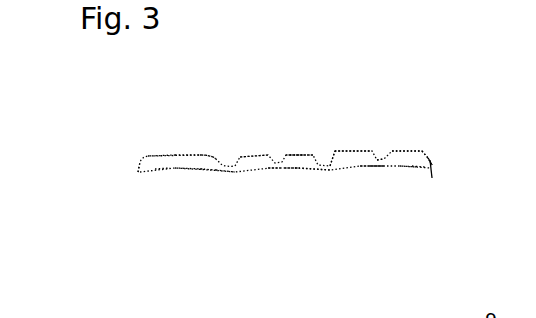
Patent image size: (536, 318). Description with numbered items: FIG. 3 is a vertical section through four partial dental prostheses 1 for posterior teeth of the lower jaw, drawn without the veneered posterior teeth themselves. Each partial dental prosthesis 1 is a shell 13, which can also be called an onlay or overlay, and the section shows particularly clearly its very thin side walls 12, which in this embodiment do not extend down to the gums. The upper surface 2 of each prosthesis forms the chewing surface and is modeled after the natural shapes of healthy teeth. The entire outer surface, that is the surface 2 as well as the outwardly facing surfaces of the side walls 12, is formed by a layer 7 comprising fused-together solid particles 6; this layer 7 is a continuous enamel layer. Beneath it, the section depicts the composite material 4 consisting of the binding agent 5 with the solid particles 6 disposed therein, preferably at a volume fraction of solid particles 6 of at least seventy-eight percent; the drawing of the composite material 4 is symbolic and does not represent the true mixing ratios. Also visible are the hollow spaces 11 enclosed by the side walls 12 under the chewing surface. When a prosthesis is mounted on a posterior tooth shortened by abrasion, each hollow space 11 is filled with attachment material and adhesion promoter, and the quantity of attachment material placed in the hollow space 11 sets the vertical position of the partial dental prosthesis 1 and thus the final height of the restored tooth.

The partial dental prosthesis 1 is at (204, 128).
The surface 2 is at (171, 155).
The composite material 4 is at (147, 151).
The binding agent 5 is at (163, 167).
The solid particles 6 is at (200, 167).
The layer 7 is at (181, 160).
The hollow space 11 is at (205, 179).
The side wall 12 is at (136, 172).
The shell 13 is at (254, 154).